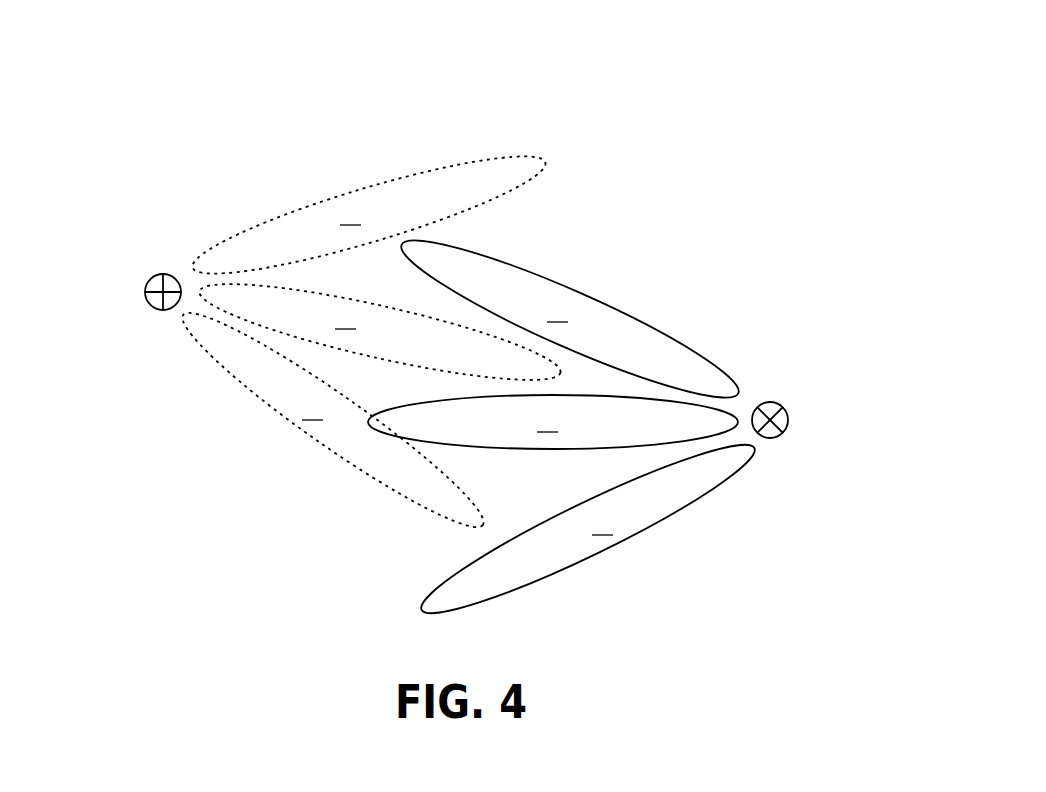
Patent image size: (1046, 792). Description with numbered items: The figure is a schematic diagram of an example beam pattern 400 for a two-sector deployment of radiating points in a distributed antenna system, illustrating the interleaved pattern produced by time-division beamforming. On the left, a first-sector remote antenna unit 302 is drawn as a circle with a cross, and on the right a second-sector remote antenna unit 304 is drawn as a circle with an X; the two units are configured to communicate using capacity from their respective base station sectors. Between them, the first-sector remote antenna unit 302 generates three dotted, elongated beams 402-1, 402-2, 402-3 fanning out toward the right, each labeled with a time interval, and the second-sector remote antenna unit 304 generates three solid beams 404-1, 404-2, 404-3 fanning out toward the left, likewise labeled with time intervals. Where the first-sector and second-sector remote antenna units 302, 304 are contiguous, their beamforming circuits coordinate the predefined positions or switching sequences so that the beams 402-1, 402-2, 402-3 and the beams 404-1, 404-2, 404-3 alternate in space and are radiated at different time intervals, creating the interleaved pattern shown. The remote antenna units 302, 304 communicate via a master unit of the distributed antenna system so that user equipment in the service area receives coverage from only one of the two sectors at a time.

The beam pattern 400 is at (128, 88).
The Sector 1 remote antenna unit 302 is at (163, 274).
The Sector 2 remote antenna unit 304 is at (787, 408).
The beam 402-1 is at (403, 177).
The beam 402-2 is at (413, 309).
The beam 402-3 is at (234, 380).
The beam 404-1 is at (680, 342).
The beam 404-2 is at (566, 450).
The beam 404-3 is at (675, 518).